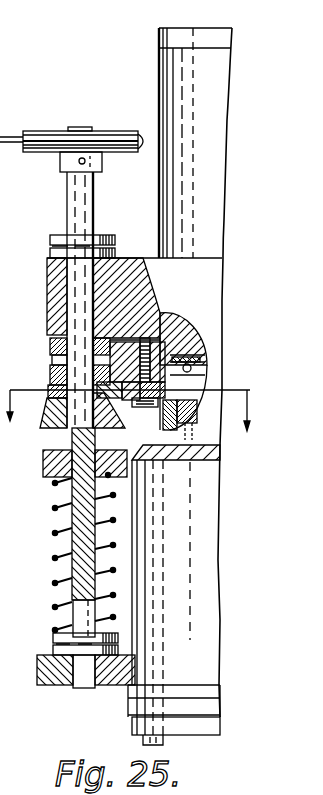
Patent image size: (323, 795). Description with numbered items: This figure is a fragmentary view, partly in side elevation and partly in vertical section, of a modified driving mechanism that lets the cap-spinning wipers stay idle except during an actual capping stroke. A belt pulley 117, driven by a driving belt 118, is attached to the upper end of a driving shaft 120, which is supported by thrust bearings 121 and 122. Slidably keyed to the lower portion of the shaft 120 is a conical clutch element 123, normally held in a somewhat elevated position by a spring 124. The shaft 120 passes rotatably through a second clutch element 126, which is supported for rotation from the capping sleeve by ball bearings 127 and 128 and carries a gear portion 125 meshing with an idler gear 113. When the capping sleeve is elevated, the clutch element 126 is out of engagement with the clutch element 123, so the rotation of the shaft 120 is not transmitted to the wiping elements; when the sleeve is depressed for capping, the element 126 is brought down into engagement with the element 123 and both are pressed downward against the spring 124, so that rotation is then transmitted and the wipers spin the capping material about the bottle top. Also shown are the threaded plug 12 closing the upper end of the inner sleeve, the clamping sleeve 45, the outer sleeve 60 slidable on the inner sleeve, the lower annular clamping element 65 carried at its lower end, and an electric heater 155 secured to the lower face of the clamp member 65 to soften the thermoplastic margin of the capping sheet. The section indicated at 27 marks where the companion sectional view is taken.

The threaded plug 12 is at (160, 38).
The driving belt 118 is at (7, 135).
The belt pulley 117 is at (97, 129).
The driving shaft 120 is at (67, 208).
The thrust bearing 121 is at (115, 243).
The ball bearing 128 is at (47, 335).
The idler gear 113 is at (165, 318).
The ball bearing 127 is at (50, 353).
The gear portion 125 is at (48, 388).
The conical clutch element 123 is at (122, 468).
The clutch element 126 is at (50, 420).
The section line 27- 27 is at (126, 429).
The spring 124 is at (50, 578).
The sleeve 45 is at (55, 536).
The thrust bearing 122 is at (53, 650).
The sleeve 60 is at (197, 622).
The lower annular clamping element 65 is at (210, 708).
The electric heater 155 is at (200, 728).